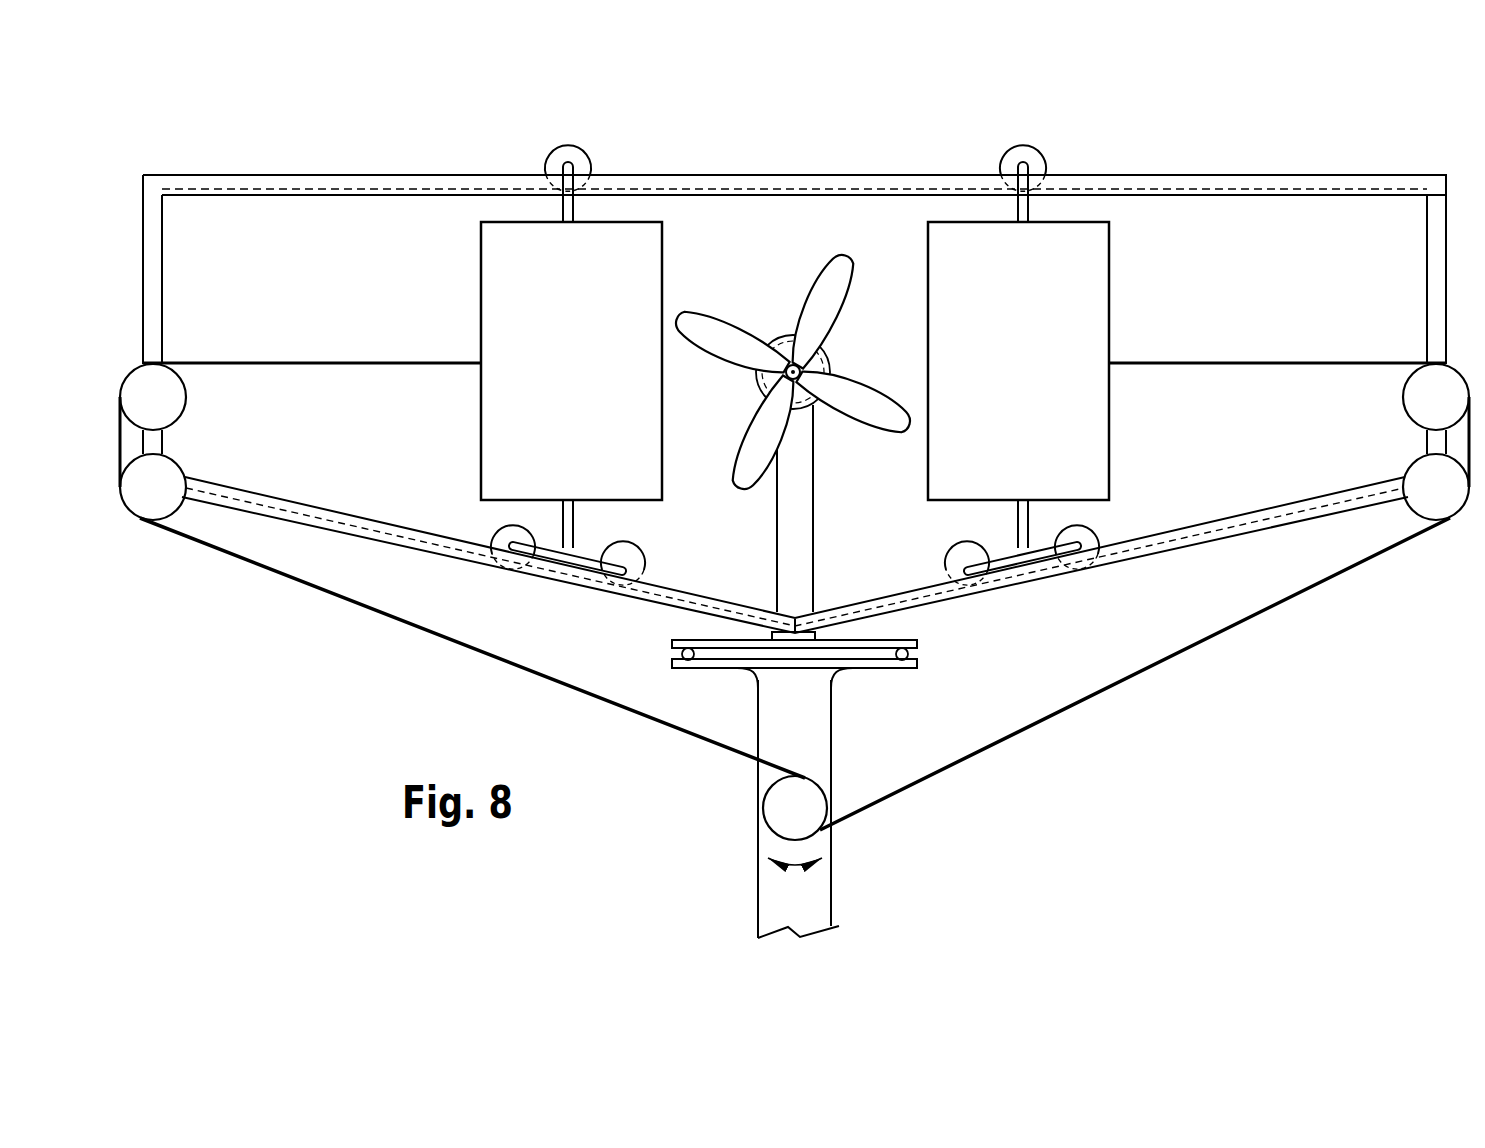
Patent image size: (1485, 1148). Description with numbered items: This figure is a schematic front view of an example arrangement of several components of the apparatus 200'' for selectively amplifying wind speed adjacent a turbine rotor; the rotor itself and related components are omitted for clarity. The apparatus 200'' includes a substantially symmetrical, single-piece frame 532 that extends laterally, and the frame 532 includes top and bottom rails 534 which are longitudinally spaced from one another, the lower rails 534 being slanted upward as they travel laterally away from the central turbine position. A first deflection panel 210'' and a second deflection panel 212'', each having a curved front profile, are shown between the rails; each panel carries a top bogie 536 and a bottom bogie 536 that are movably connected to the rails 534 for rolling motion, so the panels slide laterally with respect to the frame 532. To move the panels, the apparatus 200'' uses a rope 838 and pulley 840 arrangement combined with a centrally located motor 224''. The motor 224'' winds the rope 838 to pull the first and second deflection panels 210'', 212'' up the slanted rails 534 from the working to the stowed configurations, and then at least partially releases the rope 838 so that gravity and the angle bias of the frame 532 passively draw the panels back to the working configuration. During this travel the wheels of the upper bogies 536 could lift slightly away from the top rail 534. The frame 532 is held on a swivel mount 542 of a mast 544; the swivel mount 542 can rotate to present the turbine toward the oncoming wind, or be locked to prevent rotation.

The apparatus 200'' is at (805, 214).
The frame 532 is at (309, 137).
The bogie 536 is at (555, 142).
The first deflection panel 210'' is at (627, 355).
The second deflection panel 212'' is at (889, 387).
The rope 838 is at (363, 363).
The pulley 840 is at (143, 392).
The rail 534 is at (405, 565).
The swivel mount 542 is at (732, 683).
The motor 224'' is at (757, 823).
The mast 544 is at (833, 866).